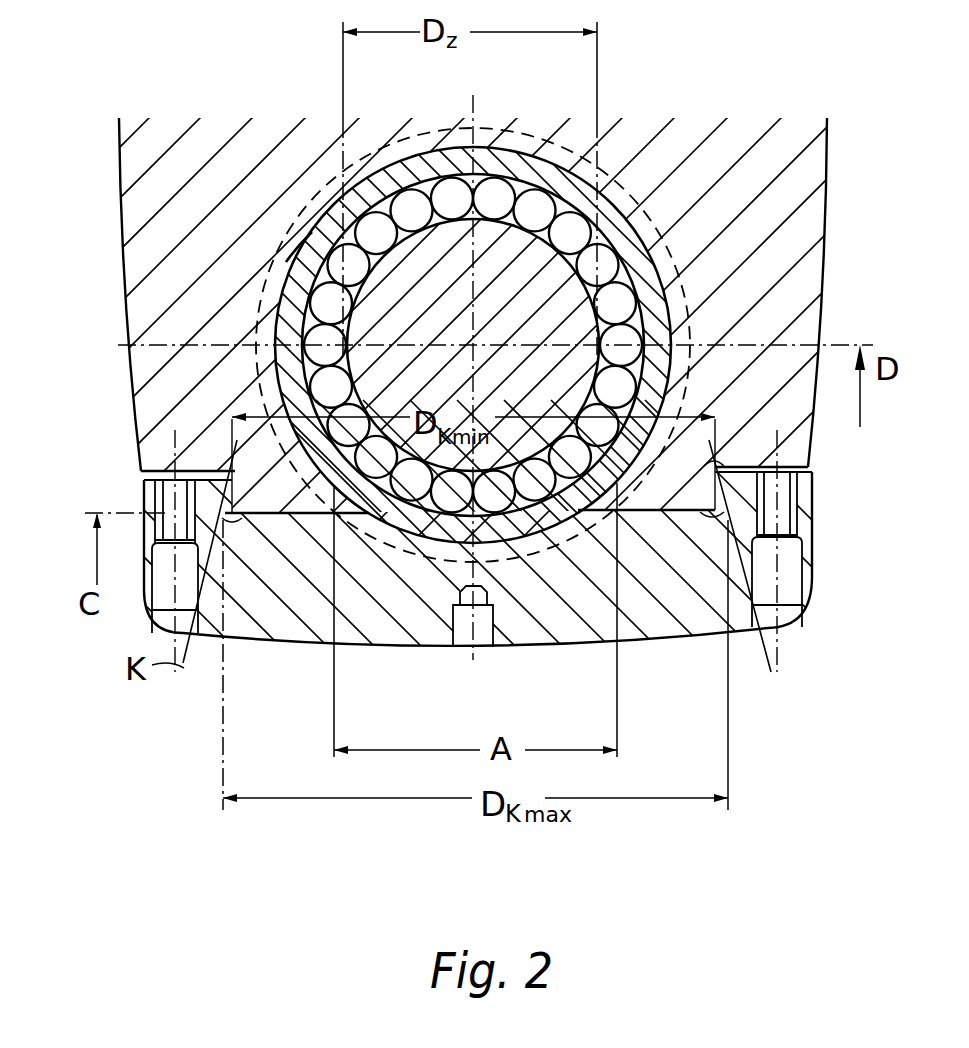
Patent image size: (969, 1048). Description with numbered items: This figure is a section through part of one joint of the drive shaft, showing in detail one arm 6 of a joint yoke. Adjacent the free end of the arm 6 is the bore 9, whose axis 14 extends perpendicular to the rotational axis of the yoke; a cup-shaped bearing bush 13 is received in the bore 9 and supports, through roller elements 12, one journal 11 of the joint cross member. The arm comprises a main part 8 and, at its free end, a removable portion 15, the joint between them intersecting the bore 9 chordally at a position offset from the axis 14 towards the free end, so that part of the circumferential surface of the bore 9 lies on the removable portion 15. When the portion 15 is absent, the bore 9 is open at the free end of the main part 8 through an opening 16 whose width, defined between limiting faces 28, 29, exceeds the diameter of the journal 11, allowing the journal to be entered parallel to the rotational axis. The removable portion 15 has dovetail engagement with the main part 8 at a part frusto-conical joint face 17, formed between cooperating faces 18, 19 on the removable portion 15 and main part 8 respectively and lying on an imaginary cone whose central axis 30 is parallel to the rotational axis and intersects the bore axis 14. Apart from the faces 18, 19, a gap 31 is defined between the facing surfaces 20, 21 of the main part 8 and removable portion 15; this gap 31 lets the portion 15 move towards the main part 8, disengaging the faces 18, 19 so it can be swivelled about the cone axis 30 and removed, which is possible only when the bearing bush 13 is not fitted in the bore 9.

The arm 6 is at (98, 180).
The main part 8 is at (152, 449).
The bore 9 is at (300, 256).
The journal 11 is at (530, 306).
The roller elements 12 is at (650, 250).
The bearing bush 13 is at (668, 300).
The axis of the bore 14 is at (462, 332).
The removable portion 15 is at (283, 626).
The opening 16 is at (348, 524).
The joint face 17 is at (200, 497).
The frusto-conical face 18 is at (700, 528).
The frusto-conical face 19 is at (748, 466).
The facing surface 20 is at (740, 466).
The facing surface 21 is at (812, 470).
The limiting face 28 is at (598, 524).
The limiting face 29 is at (342, 518).
The cone axis 30 is at (476, 124).
The gap 31 is at (808, 450).